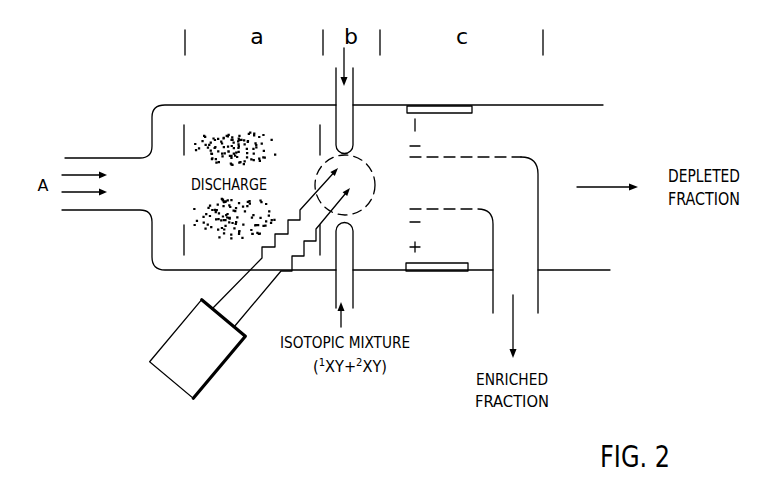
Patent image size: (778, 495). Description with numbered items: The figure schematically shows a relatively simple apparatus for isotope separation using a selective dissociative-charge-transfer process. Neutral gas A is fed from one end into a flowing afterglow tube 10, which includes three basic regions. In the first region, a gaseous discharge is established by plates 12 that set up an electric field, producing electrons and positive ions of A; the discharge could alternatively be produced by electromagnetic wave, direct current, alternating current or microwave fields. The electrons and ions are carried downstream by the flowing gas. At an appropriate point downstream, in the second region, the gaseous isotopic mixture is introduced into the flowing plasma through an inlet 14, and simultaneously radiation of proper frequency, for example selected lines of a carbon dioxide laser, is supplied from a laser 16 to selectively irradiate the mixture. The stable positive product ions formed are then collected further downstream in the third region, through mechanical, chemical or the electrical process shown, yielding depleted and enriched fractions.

The flowing afterglow tube 10 is at (152, 250).
The plates 12 is at (185, 133).
The inlet 14 is at (353, 288).
The laser 16 is at (227, 359).